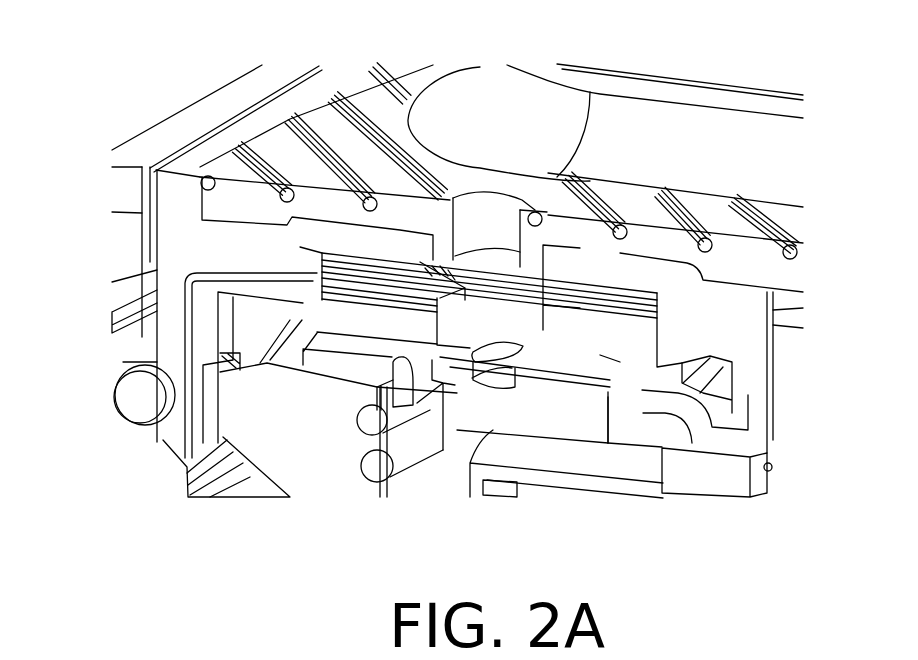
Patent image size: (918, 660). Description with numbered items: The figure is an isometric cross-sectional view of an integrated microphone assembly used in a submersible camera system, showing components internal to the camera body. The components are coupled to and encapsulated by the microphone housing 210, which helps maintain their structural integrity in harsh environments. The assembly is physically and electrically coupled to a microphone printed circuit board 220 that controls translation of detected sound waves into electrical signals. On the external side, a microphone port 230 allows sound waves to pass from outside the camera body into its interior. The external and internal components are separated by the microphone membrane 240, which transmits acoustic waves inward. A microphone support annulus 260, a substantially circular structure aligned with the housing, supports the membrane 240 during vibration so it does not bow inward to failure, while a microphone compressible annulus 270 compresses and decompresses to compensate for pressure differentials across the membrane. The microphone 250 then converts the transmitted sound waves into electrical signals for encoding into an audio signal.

The microphone housing 210 is at (305, 236).
The microphone printed circuit board 220 is at (552, 363).
The microphone port 230 is at (504, 182).
The microphone membrane 240 is at (528, 270).
The microphone 250 is at (464, 427).
The microphone support annulus 260 is at (305, 270).
The microphone compressible annulus 270 is at (340, 320).